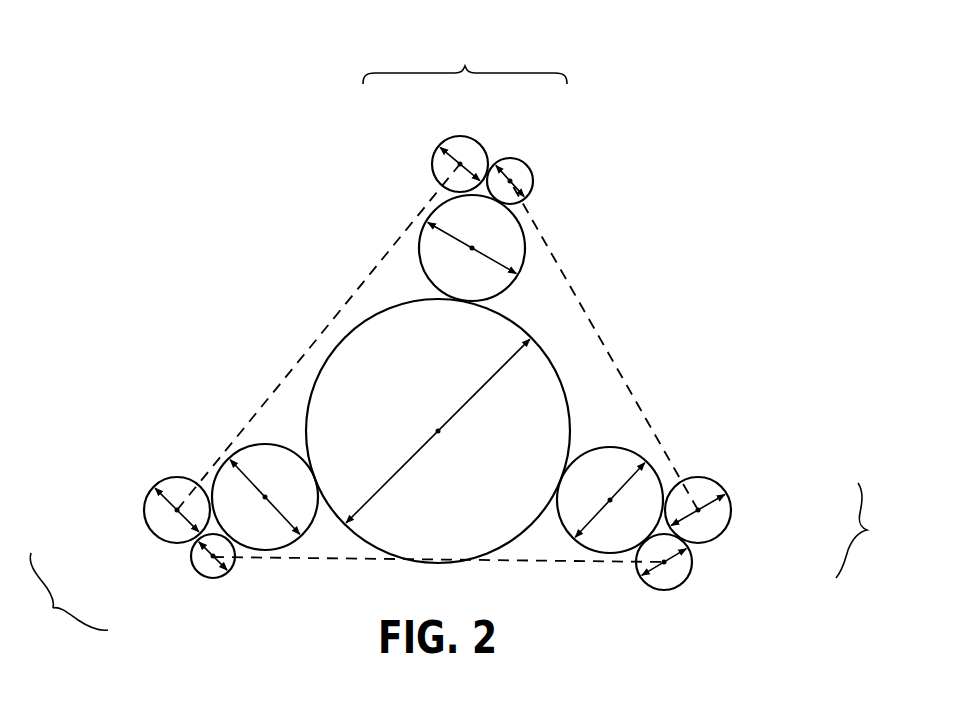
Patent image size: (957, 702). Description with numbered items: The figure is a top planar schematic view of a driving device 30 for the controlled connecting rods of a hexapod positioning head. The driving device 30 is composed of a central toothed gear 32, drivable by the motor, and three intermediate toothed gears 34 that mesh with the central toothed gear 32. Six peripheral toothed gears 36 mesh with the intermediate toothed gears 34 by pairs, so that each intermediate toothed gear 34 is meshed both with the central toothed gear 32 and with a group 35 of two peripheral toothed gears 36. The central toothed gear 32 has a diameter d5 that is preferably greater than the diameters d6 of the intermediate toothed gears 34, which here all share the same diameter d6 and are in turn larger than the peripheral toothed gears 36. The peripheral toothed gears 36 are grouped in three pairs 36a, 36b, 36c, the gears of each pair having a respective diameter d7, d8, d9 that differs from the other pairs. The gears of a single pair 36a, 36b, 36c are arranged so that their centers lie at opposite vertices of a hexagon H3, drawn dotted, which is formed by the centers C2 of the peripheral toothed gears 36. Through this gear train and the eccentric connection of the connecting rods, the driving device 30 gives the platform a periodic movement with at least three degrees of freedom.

The driving device 30 is at (672, 294).
The central toothed gear 32 is at (335, 348).
The intermediate toothed gear 34 is at (418, 243).
The group of two peripheral toothed gears 35 is at (462, 336).
The peripheral toothed gear 36 is at (447, 352).
The first pair of peripheral toothed gears 36a is at (442, 153).
The second pair of peripheral toothed gears 36b is at (152, 537).
The third pair of peripheral toothed gears 36c is at (512, 158).
The center of peripheral toothed gear C2 is at (458, 165).
The hexagon H3 is at (621, 372).
The diameter of central toothed gear d5 is at (423, 443).
The diameter of intermediate toothed gear d6 is at (526, 243).
The diameter of first pair of peripheral toothed gears d7 is at (472, 177).
The diameter of second pair of peripheral toothed gears d8 is at (163, 508).
The diameter of third pair of peripheral toothed gears d9 is at (518, 185).